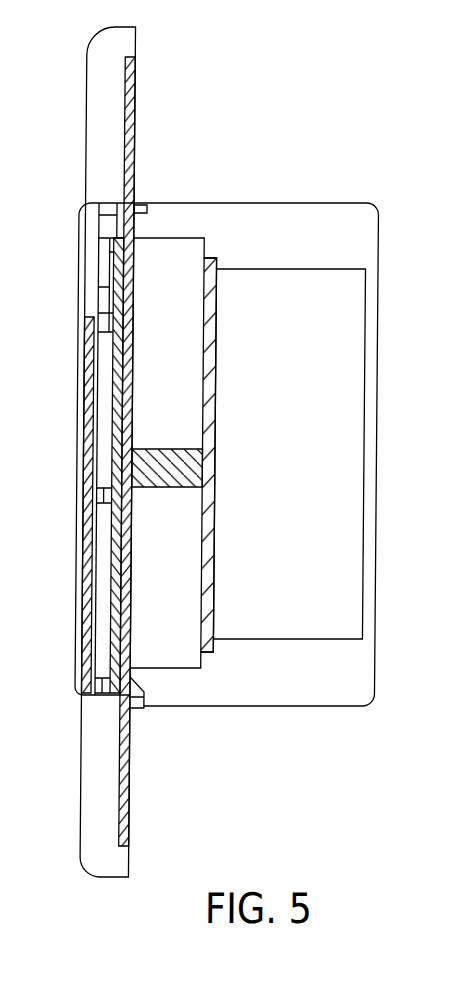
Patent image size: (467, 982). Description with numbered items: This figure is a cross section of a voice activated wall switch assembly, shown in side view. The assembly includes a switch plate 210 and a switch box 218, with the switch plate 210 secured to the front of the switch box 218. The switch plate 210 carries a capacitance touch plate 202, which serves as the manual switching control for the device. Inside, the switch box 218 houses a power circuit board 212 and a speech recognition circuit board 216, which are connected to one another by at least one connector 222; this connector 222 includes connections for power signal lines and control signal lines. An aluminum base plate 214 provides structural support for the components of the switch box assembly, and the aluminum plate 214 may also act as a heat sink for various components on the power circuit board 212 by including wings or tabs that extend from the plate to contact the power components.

The capacitance touch plate 202 is at (83, 480).
The switch plate 210 is at (82, 738).
The power circuit board 212 is at (206, 259).
The aluminum base plate 214 is at (132, 133).
The speech recognition circuit board 216 is at (112, 630).
The switch box 218 is at (377, 415).
The connector 222 is at (175, 448).